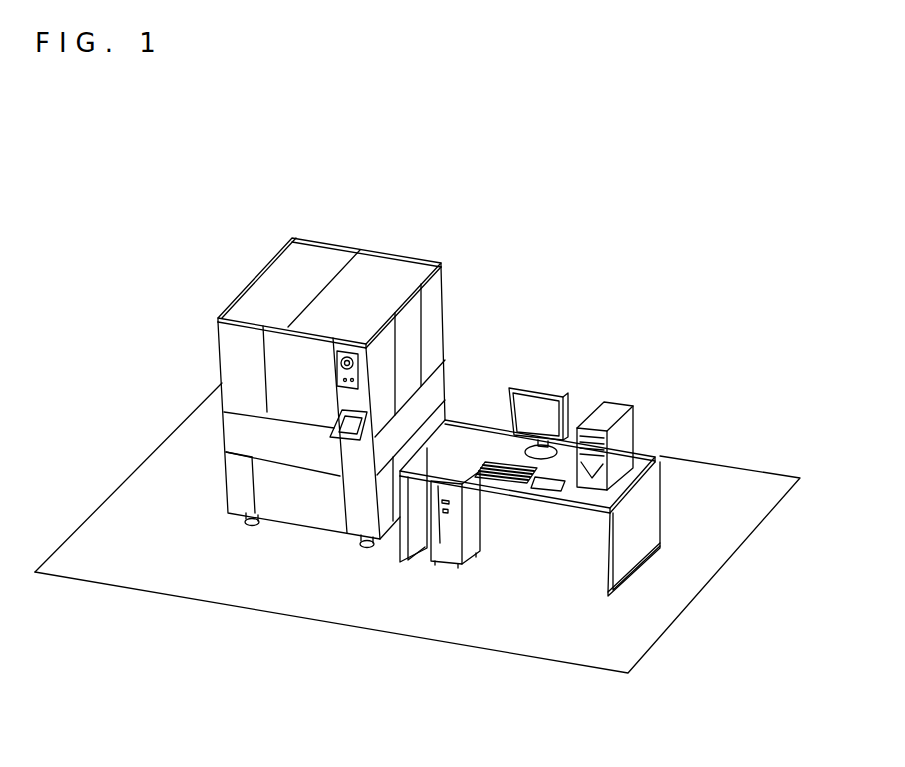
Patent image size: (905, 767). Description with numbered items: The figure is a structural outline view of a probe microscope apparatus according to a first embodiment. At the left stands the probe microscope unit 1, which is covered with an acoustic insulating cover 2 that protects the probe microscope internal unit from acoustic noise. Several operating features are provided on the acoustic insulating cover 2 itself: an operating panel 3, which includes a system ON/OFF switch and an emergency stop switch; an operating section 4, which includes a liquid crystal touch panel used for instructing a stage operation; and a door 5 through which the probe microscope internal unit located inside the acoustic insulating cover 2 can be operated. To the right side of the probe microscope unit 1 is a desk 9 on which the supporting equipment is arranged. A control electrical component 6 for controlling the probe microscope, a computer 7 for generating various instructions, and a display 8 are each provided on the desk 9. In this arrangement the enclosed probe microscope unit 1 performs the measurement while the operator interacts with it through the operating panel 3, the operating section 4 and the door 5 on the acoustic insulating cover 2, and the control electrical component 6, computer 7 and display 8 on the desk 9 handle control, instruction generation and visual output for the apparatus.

The probe microscope unit 1 is at (292, 398).
The acoustic insulating cover 2 is at (290, 288).
The operating panel 3 is at (357, 363).
The operating section 4 is at (343, 430).
The door 5 is at (298, 392).
The control electrical component 6 is at (438, 540).
The computer 7 is at (630, 420).
The display 8 is at (542, 388).
The desk 9 is at (623, 527).